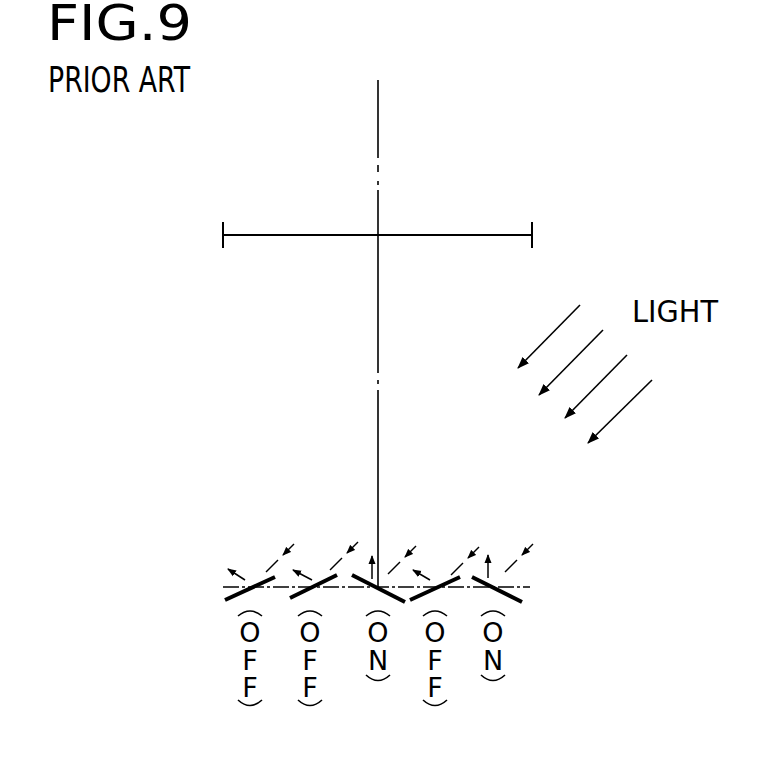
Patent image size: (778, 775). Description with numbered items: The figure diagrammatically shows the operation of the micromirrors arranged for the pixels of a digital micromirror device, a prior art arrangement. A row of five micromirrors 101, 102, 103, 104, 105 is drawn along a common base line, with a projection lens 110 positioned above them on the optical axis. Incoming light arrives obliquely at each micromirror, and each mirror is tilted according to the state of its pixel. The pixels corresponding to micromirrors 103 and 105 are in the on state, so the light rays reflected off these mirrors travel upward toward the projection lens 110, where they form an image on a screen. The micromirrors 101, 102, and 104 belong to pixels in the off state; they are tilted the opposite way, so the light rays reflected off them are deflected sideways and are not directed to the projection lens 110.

The micromirror 101 is at (258, 577).
The micromirror 102 is at (318, 577).
The micromirror 103 is at (387, 580).
The micromirror 104 is at (442, 580).
The micromirror 105 is at (523, 598).
The projection lens 110 is at (292, 233).